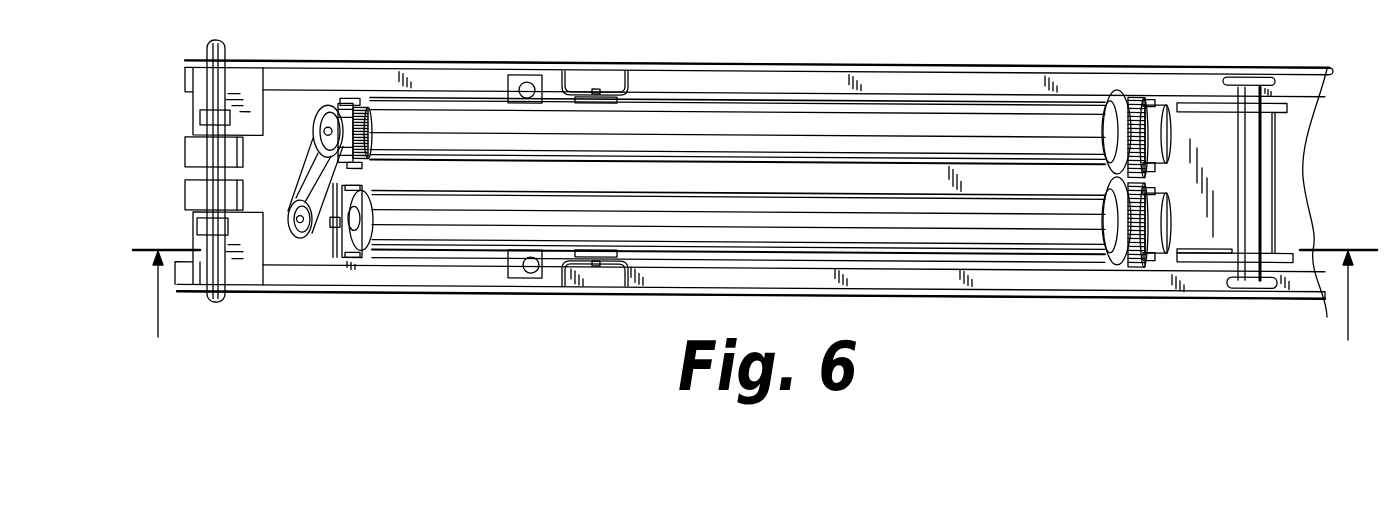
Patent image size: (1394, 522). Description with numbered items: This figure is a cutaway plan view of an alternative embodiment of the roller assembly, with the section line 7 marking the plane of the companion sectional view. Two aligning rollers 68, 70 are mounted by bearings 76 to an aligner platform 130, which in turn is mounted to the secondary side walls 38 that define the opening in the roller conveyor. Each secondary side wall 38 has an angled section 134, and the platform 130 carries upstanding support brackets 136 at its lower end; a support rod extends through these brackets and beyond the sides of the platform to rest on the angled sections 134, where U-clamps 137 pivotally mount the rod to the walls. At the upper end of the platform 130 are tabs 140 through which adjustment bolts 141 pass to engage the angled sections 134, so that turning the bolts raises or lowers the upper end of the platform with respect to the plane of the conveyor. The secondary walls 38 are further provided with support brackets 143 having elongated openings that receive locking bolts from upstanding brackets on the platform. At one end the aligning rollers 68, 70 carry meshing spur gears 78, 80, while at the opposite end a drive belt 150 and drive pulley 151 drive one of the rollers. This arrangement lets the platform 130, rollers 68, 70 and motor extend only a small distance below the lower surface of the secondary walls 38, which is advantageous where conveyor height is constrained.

The section line 7 is at (755, 311).
The secondary side walls 38 is at (1318, 68).
The aligning roller 68 is at (954, 227).
The aligning roller 70 is at (886, 137).
The bearings 76 is at (362, 101).
The spur gear 78 is at (1137, 283).
The spur gear 80 is at (1125, 92).
The aligner platform 130 is at (1225, 141).
The angled section 134 is at (1318, 88).
The support brackets 136 is at (1287, 103).
The U-clamps 137 is at (1245, 77).
The tabs 140 is at (515, 76).
The adjustment bolts 141 is at (532, 88).
The support brackets 143 is at (632, 84).
The drive belt 150 is at (336, 98).
The drive pulley 151 is at (318, 133).